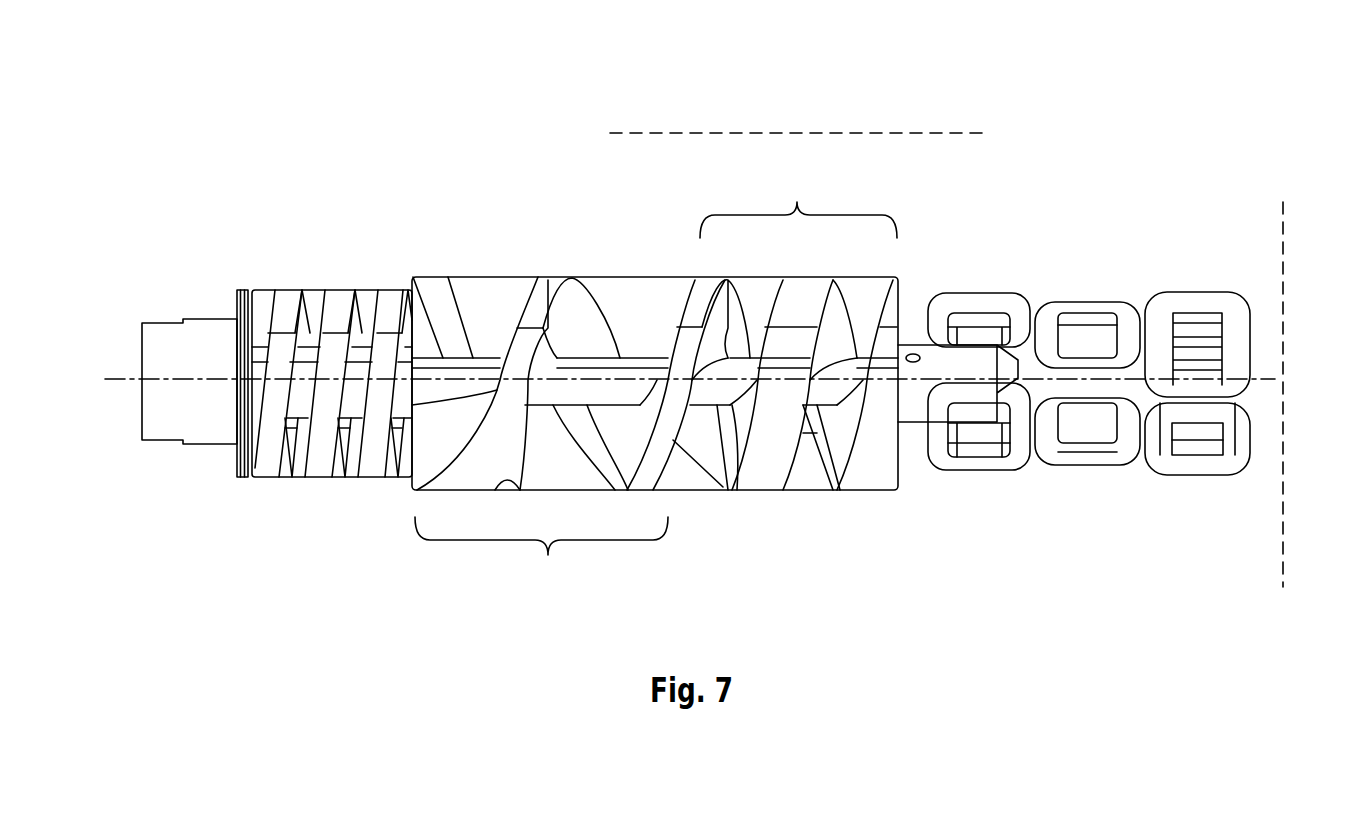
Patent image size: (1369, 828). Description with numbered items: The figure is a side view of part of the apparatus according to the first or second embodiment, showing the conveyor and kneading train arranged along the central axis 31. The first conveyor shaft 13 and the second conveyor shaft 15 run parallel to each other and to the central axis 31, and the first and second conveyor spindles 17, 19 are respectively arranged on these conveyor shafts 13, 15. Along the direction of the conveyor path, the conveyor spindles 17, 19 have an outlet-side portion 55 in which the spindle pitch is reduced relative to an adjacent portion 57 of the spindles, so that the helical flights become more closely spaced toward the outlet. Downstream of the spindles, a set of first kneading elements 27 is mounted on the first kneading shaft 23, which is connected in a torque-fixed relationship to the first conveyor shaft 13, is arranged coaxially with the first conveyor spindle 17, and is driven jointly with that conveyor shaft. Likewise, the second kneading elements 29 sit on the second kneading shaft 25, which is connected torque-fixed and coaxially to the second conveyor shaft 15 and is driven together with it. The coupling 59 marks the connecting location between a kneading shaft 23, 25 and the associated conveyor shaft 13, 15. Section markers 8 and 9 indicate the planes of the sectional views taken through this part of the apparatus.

The central axis 31 is at (262, 327).
The first conveyor shaft 13 is at (262, 327).
The second conveyor shaft 15 is at (262, 327).
The first kneading shaft 23 is at (262, 327).
The second kneading shaft 25 is at (116, 378).
The first conveyor spindle 17 is at (630, 338).
The second conveyor spindle 19 is at (508, 323).
The outlet-side portion 55 is at (798, 202).
The adjacent portion 57 is at (541, 555).
The coupling 59 is at (907, 333).
The first kneading elements 27 is at (1089, 322).
The second kneading elements 29 is at (1077, 299).
The section line VIII-VIII 8 is at (1285, 560).
The section line IX-IX 9 is at (962, 133).